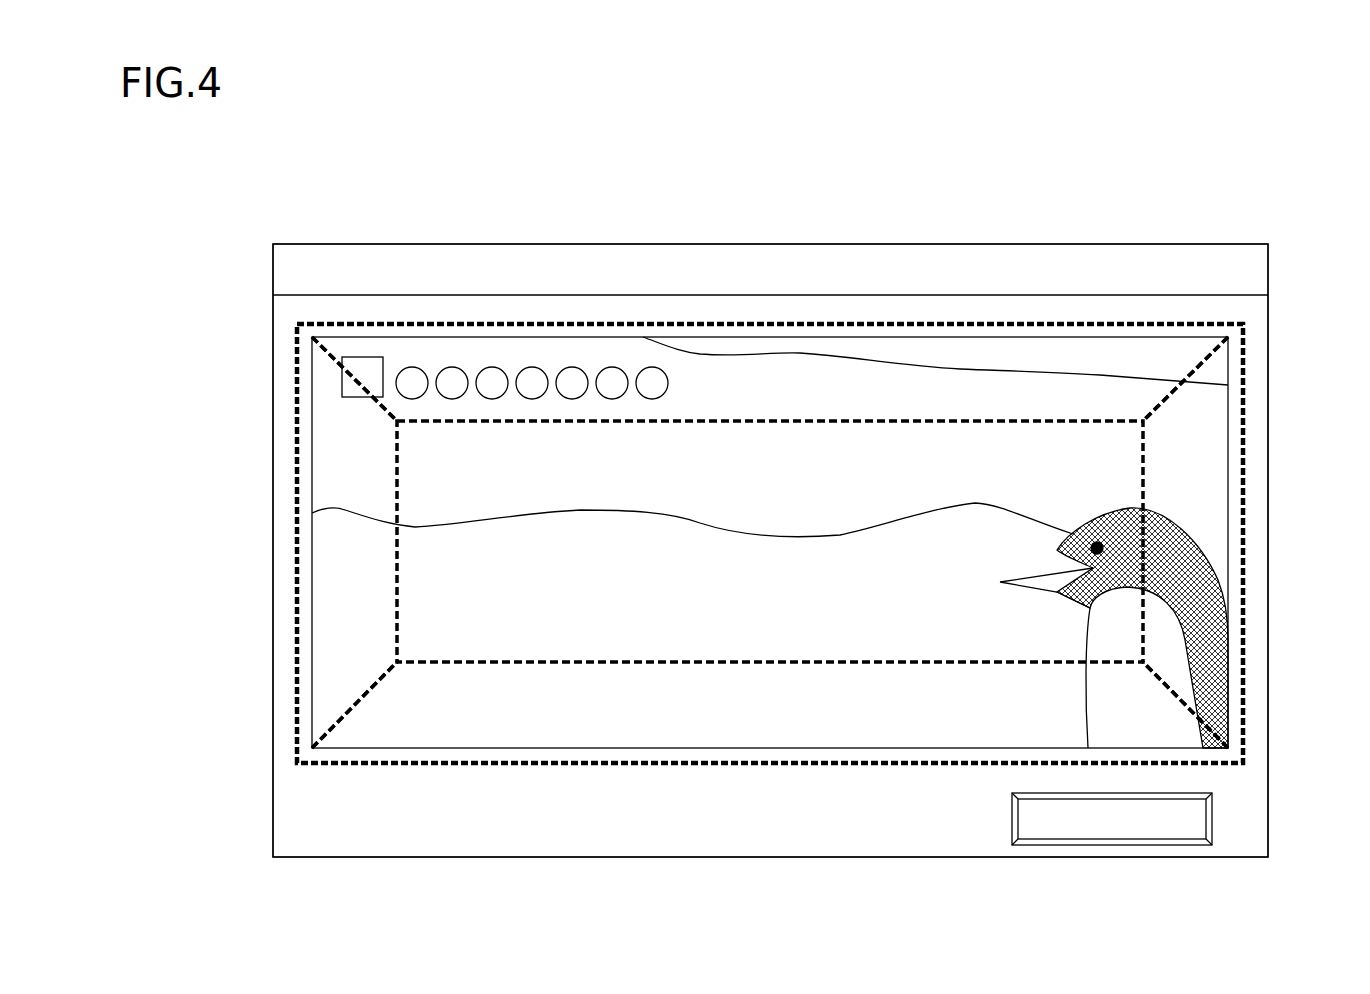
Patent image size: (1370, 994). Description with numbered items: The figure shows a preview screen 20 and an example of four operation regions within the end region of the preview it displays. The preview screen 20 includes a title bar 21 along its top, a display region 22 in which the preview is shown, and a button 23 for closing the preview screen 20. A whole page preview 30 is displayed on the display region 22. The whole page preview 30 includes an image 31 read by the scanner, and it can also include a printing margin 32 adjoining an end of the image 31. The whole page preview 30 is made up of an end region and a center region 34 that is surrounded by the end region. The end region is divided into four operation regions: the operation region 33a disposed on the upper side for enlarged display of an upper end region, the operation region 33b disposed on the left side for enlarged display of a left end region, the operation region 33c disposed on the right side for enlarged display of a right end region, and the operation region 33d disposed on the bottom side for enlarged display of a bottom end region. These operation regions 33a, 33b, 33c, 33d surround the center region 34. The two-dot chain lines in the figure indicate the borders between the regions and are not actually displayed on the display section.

The preview screen 20 is at (402, 213).
The title bar 21 is at (1210, 272).
The display region 22 is at (1228, 316).
The button 23 is at (1180, 820).
The whole page preview 30 is at (1026, 312).
The image 31 is at (1190, 591).
The printing margin 32 is at (1232, 656).
The operation region 33a is at (770, 383).
The operation region 33b is at (355, 456).
The operation region 33c is at (1190, 460).
The operation region 33d is at (415, 712).
The center region 34 is at (867, 483).